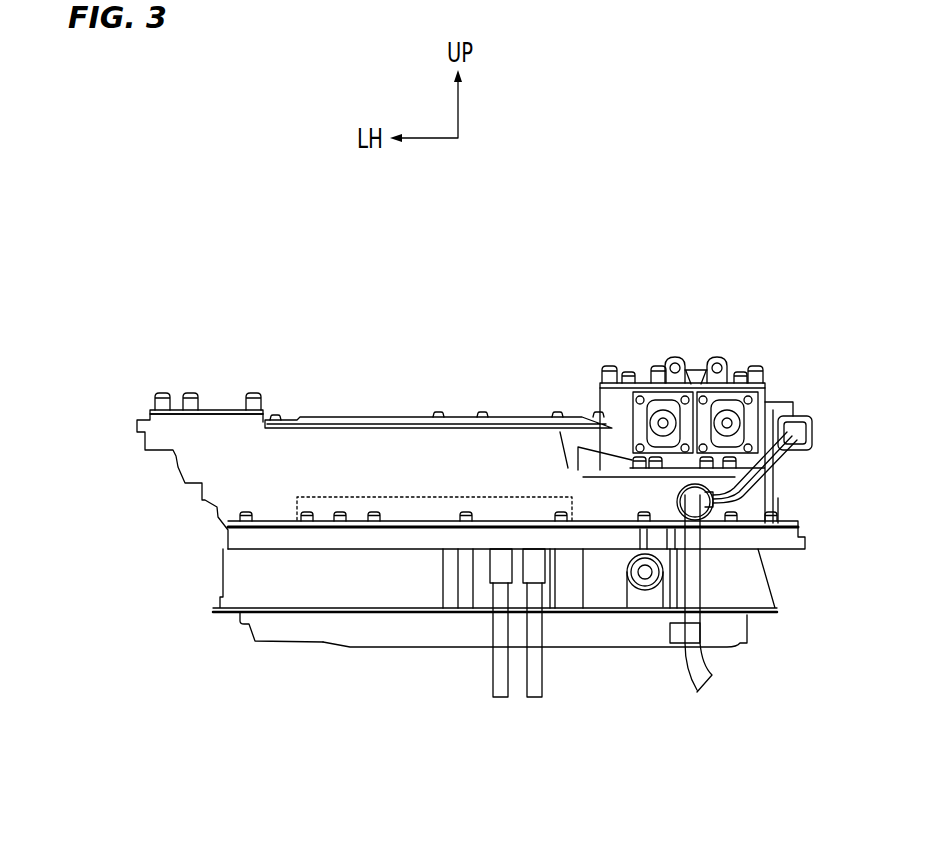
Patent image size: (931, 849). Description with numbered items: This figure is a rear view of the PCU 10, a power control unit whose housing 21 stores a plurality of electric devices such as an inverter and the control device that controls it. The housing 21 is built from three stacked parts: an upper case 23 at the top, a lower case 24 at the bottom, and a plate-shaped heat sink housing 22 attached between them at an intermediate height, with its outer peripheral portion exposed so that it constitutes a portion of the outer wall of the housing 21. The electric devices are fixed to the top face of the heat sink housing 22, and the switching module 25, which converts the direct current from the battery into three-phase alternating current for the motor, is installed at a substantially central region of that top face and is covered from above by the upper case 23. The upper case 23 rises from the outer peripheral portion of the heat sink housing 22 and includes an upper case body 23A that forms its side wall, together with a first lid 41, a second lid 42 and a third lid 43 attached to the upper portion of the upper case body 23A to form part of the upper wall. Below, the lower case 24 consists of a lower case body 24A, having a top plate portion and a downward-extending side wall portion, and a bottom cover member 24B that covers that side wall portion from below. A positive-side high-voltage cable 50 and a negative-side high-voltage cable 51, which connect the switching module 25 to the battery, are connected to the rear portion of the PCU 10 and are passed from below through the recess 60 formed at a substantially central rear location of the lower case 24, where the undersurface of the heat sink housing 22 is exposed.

The PCU 10 is at (551, 262).
The housing 21 is at (57, 515).
The heat sink housing 22 is at (238, 540).
The upper case 23 is at (176, 489).
The upper case body 23A is at (275, 463).
The lower case 24 is at (212, 578).
The lower case body 24A is at (277, 590).
The bottom cover member 24B is at (350, 653).
The switching module 25 is at (345, 497).
The first lid 41 is at (413, 417).
The second lid 42 is at (645, 382).
The third lid 43 is at (673, 468).
The positive-side high-voltage cable 50 is at (497, 673).
The negative-side high-voltage cable 51 is at (533, 667).
The recess 60 is at (458, 592).